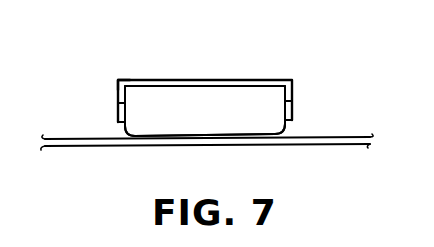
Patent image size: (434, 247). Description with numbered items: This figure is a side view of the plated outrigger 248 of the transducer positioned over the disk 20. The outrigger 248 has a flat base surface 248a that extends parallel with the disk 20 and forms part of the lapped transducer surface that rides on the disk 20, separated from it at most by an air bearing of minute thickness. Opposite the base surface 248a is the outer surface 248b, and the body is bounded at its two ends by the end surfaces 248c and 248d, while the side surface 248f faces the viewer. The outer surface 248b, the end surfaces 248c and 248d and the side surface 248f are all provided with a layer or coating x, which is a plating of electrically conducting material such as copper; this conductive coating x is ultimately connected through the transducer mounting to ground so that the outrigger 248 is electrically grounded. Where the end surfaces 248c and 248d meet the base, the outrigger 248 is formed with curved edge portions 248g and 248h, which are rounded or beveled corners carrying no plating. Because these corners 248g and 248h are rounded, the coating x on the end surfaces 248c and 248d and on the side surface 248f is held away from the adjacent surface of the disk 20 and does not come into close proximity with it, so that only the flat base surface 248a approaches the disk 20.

The outrigger 248 is at (291, 74).
The flat base surface 248a is at (215, 147).
The outer surface 248b is at (225, 87).
The end surface 248c is at (124, 103).
The end surface 248d is at (287, 100).
The side surface 248f is at (180, 105).
The curved edge portion 248g is at (280, 132).
The curved edge portion 248h is at (128, 133).
The disk 20 is at (343, 142).
The layer or coating x is at (127, 82).